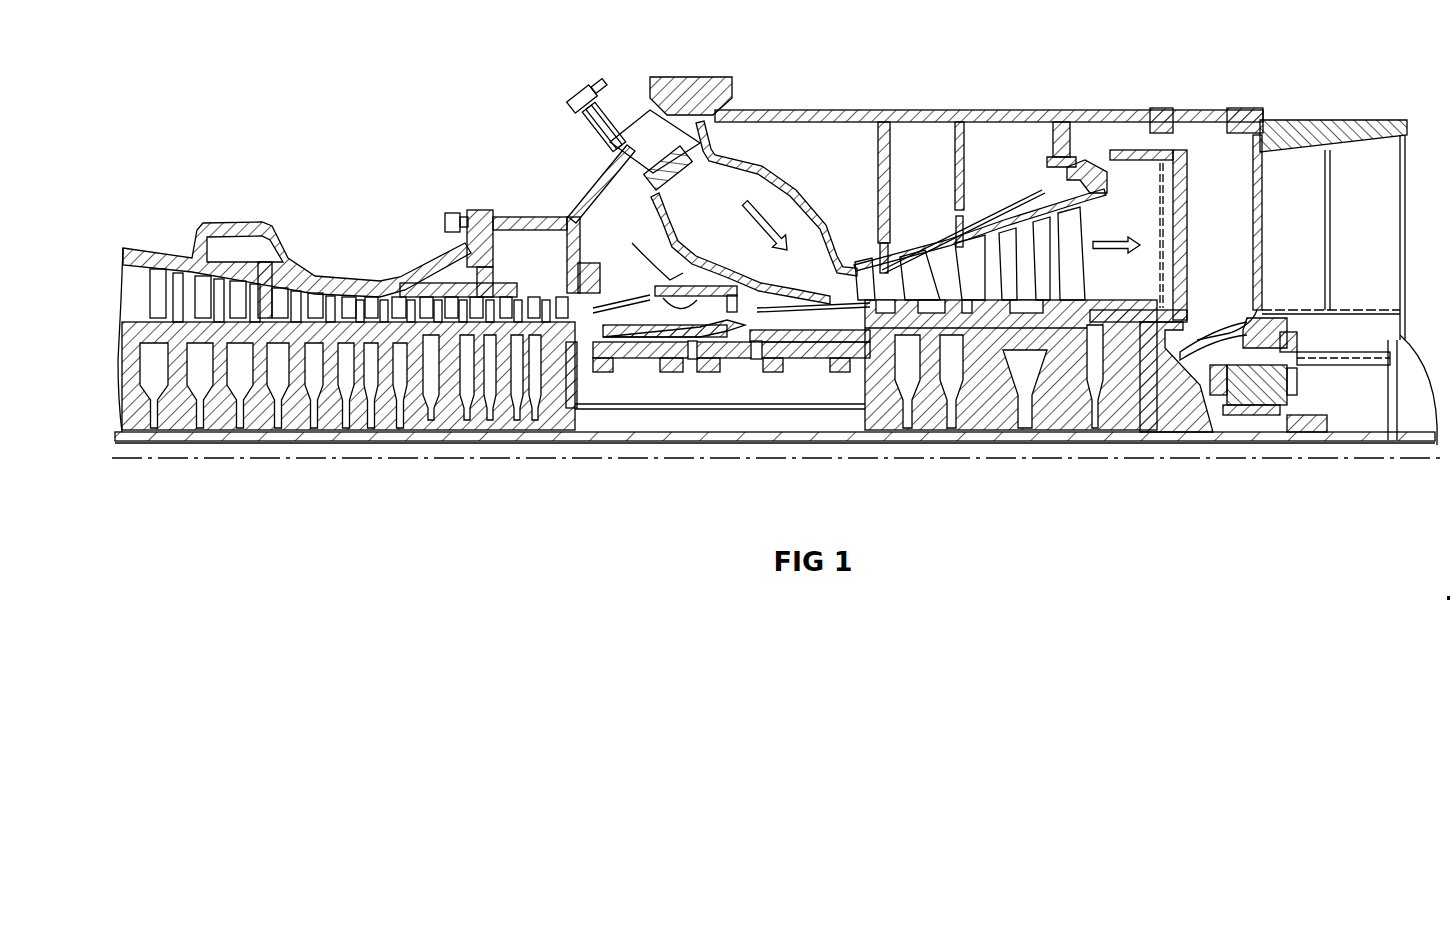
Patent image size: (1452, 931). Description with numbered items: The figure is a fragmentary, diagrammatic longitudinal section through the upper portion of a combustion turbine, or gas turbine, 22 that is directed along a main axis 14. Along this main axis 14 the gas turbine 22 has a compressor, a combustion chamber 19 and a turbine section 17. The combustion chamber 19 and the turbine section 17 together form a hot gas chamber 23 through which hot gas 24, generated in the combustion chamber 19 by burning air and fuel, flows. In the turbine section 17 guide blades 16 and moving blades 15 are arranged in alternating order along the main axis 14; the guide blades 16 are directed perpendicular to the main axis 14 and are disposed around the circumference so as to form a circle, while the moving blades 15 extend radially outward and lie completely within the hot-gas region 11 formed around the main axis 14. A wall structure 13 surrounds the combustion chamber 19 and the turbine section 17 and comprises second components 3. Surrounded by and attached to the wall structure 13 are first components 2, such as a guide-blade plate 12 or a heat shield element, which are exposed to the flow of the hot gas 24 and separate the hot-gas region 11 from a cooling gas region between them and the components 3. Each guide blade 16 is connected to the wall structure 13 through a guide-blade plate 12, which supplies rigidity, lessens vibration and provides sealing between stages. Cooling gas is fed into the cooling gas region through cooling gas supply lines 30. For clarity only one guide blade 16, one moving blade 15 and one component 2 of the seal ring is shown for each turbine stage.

The first component 2 is at (765, 174).
The second component 3 is at (1075, 178).
The hot-gas region 11 is at (775, 358).
The guide-blade plate 12 is at (1027, 205).
The wall structure 13 is at (743, 150).
The main axis 14 is at (776, 480).
The moving blade 15 is at (1010, 389).
The guide blade 16 is at (1023, 250).
The turbine section 17 is at (868, 270).
The combustion chamber 19 is at (803, 275).
The combustion turbine 22 is at (610, 217).
The hot gas chamber 23 is at (930, 267).
The hot gas 24 is at (738, 218).
The cooling gas supply line 30 is at (690, 98).